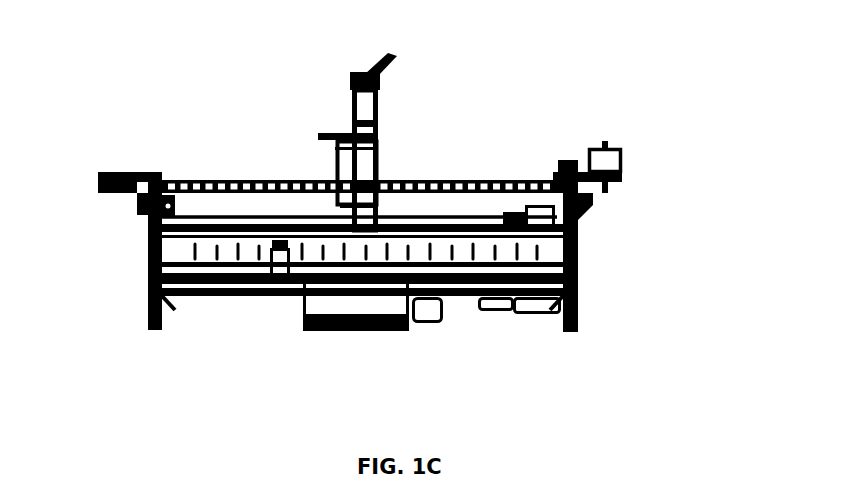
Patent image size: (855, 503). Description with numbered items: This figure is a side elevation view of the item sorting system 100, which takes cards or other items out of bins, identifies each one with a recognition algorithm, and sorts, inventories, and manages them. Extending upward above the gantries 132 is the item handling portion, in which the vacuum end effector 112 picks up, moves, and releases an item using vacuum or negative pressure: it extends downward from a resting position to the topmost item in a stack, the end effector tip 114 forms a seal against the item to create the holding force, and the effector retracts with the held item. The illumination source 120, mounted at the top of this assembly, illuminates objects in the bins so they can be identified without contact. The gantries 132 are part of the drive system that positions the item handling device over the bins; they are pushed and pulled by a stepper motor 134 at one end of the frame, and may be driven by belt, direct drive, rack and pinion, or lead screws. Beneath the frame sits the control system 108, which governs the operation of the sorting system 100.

The sorting system 100 is at (412, 205).
The control system 108 is at (355, 305).
The vacuum end effector 112 is at (361, 168).
The end effector tip 114 is at (397, 205).
The illumination source 120 is at (462, 120).
The gantries 132 is at (266, 177).
The stepper motor 134 is at (626, 139).